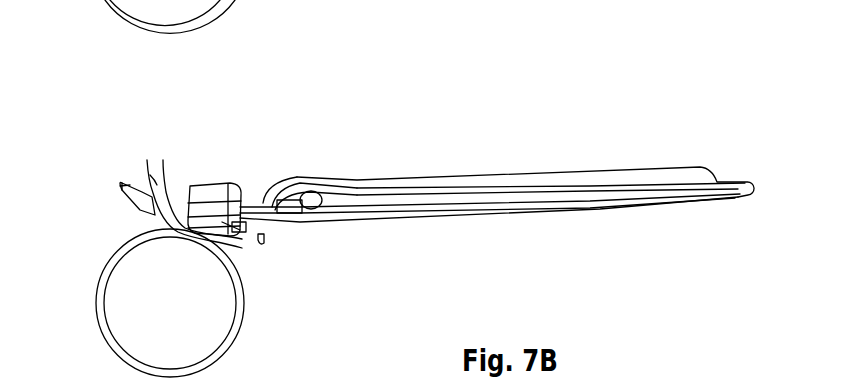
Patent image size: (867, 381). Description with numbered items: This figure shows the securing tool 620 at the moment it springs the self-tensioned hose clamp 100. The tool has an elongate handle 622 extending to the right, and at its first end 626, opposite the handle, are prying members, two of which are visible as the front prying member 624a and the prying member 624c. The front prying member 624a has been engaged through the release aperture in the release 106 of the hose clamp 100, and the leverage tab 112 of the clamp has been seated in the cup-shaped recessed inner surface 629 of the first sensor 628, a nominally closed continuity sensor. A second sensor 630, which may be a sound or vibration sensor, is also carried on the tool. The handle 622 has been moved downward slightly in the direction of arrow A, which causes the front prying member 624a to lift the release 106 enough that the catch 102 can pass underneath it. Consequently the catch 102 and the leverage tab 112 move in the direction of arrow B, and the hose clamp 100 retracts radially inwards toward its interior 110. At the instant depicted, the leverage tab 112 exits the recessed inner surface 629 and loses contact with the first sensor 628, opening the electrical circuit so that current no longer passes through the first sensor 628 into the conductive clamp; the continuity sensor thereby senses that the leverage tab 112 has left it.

The hose clamp 100 is at (78, 300).
The catch 102 is at (186, 223).
The release 106 is at (157, 184).
The interior 110 is at (112, 10).
The leverage tab 112 is at (257, 252).
The securing tool 620 is at (298, 116).
The elongate handle 622 is at (693, 177).
The front prying member 624a is at (125, 185).
The prying member 624c is at (227, 185).
The first end 626 is at (118, 192).
The first sensor 628 is at (237, 227).
The recessed inner surface 629 is at (222, 222).
The second sensor 630 is at (293, 202).
The arrow A is at (748, 312).
The arrow B is at (252, 262).